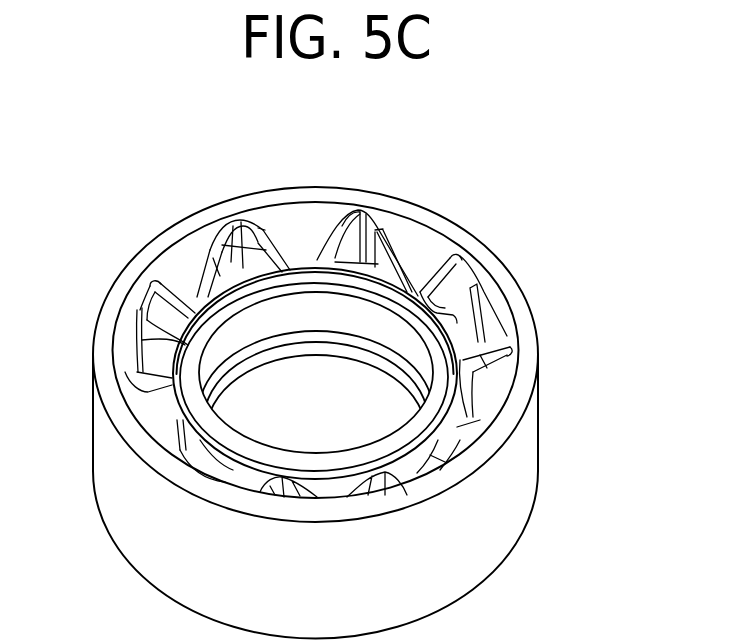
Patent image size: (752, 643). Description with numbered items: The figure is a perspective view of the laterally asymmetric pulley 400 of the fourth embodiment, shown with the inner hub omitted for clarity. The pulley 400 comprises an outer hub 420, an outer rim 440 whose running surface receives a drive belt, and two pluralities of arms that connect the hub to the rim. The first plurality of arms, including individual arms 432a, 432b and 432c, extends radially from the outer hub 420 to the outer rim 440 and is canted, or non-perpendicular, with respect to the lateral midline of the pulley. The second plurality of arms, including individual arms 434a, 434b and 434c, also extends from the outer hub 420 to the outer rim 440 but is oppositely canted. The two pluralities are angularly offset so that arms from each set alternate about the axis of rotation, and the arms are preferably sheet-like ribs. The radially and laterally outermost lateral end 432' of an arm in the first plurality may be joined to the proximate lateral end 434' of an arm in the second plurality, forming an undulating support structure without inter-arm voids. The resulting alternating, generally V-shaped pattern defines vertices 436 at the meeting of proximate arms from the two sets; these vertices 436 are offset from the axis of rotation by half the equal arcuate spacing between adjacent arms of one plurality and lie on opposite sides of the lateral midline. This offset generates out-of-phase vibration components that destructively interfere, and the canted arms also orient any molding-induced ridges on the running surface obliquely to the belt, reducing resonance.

The laterally asymmetric pulley 400 is at (657, 156).
The outer hub 420 is at (443, 343).
The outer rim 440 is at (515, 389).
The arm 432a is at (335, 262).
The arm 432b is at (215, 265).
The arm 432c is at (150, 338).
The lateral end of first-plurality arm 432' is at (475, 262).
The arm 434a is at (281, 266).
The arm 434b is at (178, 303).
The arm 434c is at (160, 362).
The lateral end of second-plurality arm 434' is at (525, 281).
The vertex 436 is at (153, 282).